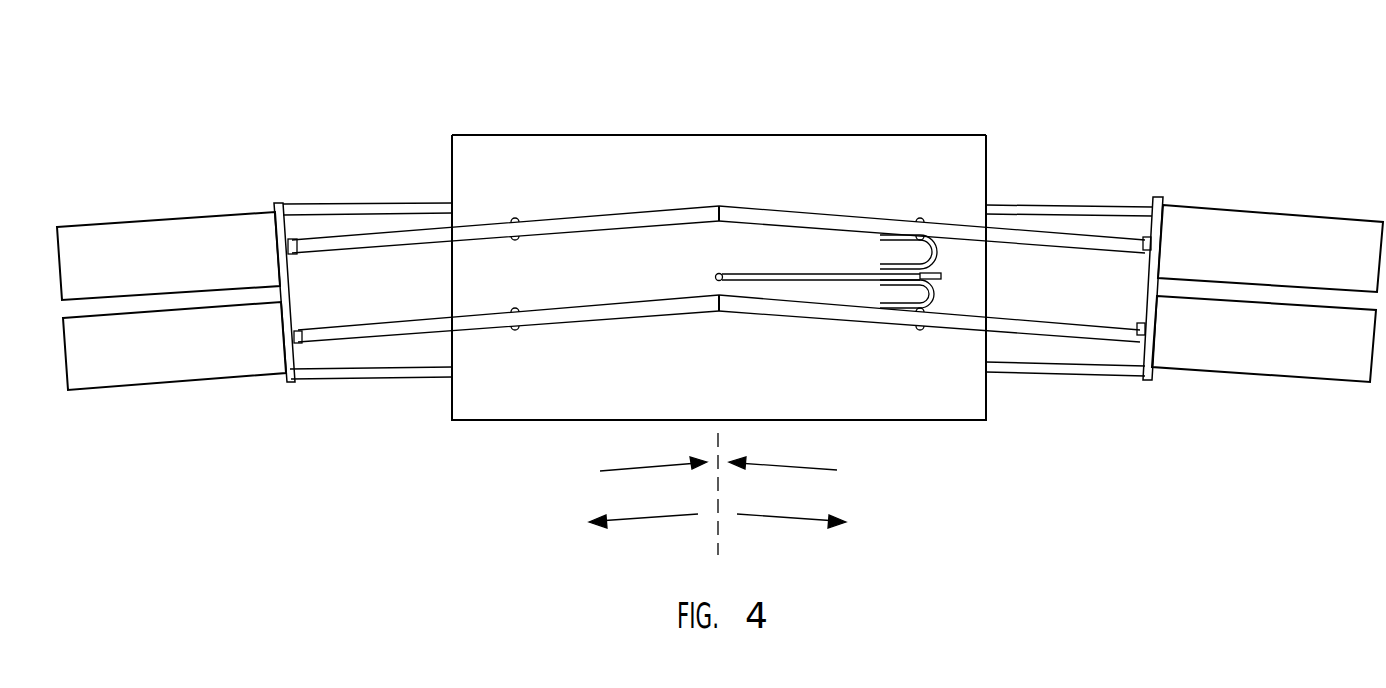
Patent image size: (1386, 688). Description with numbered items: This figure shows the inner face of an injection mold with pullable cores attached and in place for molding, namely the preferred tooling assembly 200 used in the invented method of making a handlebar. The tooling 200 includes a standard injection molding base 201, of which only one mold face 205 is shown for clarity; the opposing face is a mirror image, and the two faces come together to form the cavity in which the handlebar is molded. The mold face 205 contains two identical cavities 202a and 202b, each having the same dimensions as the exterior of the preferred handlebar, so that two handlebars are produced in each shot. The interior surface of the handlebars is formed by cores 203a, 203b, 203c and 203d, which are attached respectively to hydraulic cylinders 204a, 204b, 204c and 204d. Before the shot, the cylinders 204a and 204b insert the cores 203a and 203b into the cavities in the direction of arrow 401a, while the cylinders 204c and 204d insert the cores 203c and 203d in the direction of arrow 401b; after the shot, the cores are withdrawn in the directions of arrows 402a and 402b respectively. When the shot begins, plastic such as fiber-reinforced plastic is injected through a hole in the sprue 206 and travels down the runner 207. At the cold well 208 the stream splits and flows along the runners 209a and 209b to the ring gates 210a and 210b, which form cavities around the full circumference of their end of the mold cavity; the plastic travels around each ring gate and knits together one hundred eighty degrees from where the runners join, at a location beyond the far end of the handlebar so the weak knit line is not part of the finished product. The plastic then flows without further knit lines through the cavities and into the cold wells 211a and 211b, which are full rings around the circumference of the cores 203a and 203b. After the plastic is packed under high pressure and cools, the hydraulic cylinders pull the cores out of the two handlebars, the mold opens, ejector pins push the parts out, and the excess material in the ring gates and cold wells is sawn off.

The tooling assembly 200 is at (524, 118).
The injection molding base 201 is at (922, 135).
The mold face 205 is at (720, 135).
The cavity 202a is at (704, 206).
The cavity 202b is at (718, 314).
The core 203a is at (370, 245).
The core 203b is at (358, 328).
The core 203c is at (1088, 237).
The core 203d is at (1075, 325).
The hydraulic cylinder 204a is at (163, 228).
The hydraulic cylinder 204b is at (160, 370).
The hydraulic cylinder 204c is at (1268, 218).
The hydraulic cylinder 204d is at (1275, 362).
The sprue 206 is at (715, 277).
The runner 207 is at (816, 274).
The cold well 208 is at (942, 276).
The runner 209a is at (938, 250).
The runner 209b is at (938, 296).
The ring gate 210a is at (920, 218).
The ring gate 210b is at (920, 328).
The cold well 211a is at (515, 218).
The cold well 211b is at (515, 328).
The arrow 401a is at (653, 451).
The arrow 401b is at (783, 450).
The arrow 402a is at (643, 504).
The arrow 402b is at (791, 504).